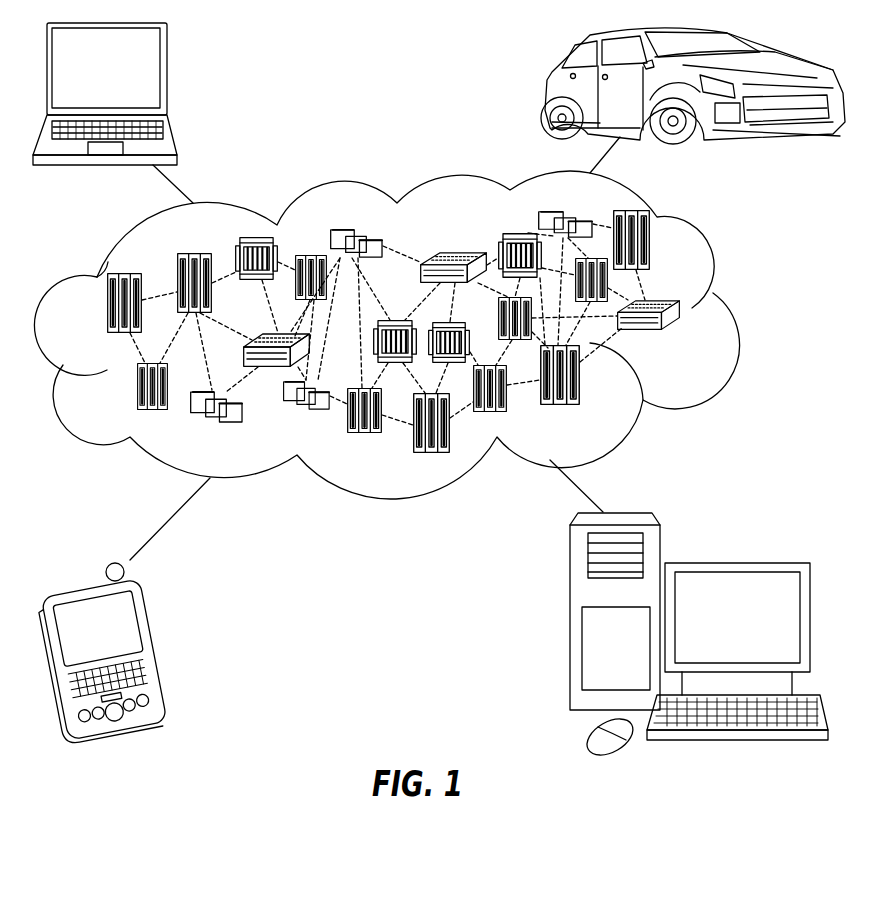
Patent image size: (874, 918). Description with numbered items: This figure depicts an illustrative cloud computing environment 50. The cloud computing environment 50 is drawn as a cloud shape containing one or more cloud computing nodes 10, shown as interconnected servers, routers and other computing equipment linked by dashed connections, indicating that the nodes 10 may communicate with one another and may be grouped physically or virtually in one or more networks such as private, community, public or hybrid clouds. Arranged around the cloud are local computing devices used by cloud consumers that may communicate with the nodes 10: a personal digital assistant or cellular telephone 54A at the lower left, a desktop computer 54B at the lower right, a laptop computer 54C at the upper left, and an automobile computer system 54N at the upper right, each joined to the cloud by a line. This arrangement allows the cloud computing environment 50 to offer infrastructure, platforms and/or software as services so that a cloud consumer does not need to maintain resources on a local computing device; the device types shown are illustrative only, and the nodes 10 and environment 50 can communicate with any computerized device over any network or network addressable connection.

The cloud computing nodes 10 is at (690, 342).
The cloud computing environment 50 is at (737, 310).
The personal digital assistant or cellular telephone 54A is at (153, 640).
The desktop computer 54B is at (735, 562).
The laptop computer 54C is at (167, 75).
The automobile computer system 54N is at (543, 97).